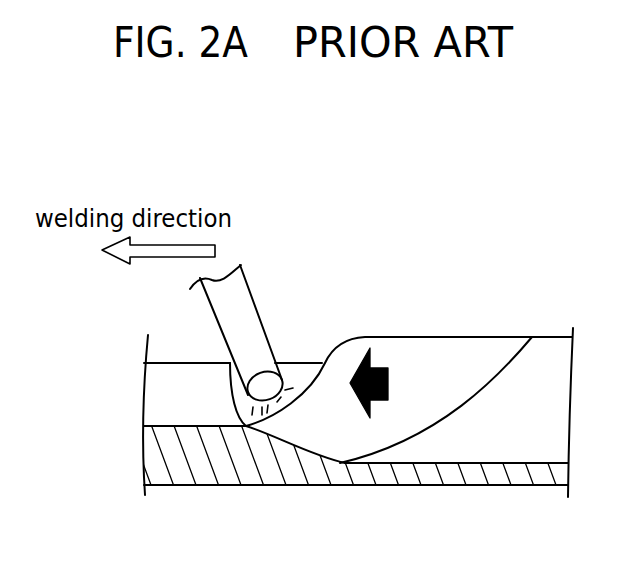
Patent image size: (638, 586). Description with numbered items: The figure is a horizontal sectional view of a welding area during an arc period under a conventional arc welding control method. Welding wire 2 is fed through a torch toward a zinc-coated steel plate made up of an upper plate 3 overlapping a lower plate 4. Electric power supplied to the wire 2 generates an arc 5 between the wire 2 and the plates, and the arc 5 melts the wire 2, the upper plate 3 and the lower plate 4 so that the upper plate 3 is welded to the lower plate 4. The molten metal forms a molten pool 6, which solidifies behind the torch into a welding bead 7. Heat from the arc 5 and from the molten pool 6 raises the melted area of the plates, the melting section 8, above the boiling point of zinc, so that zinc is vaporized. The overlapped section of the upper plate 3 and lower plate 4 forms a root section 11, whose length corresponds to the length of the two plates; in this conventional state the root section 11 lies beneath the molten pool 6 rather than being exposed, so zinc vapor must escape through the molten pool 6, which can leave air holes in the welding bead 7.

The welding wire 2 is at (262, 273).
The upper plate 3 is at (158, 395).
The lower plate 4 is at (293, 472).
The arc 5 is at (255, 433).
The molten pool 6 is at (443, 363).
The welding bead 7 is at (538, 362).
The melting section 8 is at (290, 378).
The root section 11 is at (198, 427).